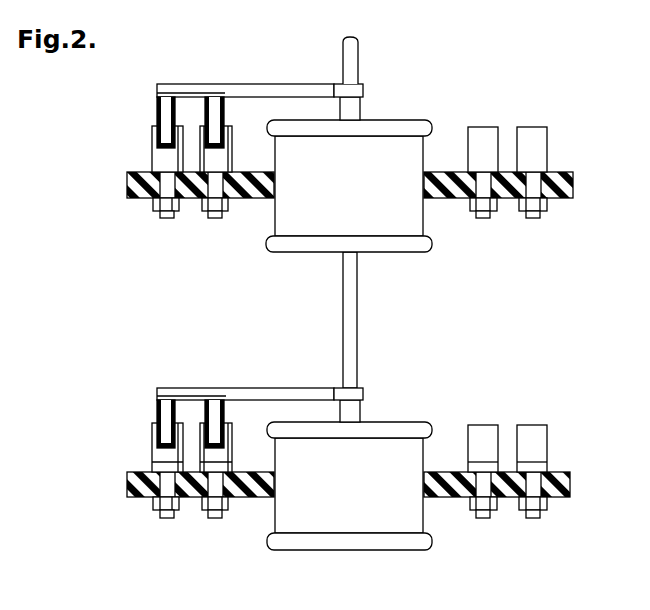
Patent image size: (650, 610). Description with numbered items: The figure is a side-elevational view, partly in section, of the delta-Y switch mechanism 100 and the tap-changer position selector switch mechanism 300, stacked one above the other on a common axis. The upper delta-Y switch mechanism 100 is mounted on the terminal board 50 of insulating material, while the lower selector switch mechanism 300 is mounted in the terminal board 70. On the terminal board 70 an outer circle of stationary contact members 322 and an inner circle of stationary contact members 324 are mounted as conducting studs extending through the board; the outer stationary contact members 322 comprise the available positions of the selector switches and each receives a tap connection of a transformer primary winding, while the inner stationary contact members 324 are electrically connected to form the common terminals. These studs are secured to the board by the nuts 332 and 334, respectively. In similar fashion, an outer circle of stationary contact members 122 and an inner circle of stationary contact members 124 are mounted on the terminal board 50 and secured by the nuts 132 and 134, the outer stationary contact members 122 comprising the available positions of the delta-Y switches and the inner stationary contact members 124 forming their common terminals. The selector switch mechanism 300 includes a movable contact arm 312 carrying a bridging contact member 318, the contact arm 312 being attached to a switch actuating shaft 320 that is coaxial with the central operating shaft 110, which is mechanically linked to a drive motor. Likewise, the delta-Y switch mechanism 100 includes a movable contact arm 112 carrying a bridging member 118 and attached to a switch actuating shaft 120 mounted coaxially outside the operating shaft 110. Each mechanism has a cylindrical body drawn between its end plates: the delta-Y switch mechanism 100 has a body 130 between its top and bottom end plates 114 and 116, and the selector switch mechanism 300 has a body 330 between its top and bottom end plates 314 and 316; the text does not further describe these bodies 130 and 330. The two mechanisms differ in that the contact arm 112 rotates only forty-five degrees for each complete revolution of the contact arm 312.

The terminal board 50 is at (573, 186).
The terminal board 70 is at (570, 490).
The delta-Y switch mechanism 100 is at (412, 278).
The operating shaft 110 is at (359, 61).
The movable contact arm 112 is at (291, 85).
The top end plate 114 is at (432, 128).
The bottom end plate 116 is at (425, 252).
The bridging member 118 is at (157, 113).
The switch actuating shaft 120 is at (360, 115).
The stationary contact members 122 is at (152, 151).
The stationary contact members 124 is at (232, 152).
The cylindrical housing 130 is at (423, 219).
The nuts 132 is at (158, 216).
The nuts 134 is at (227, 218).
The tap-changer position selector switch mechanism 300 is at (410, 580).
The movable contact arm 312 is at (304, 387).
The top end plate 314 is at (432, 429).
The bottom end plate 316 is at (425, 550).
The bridging contact member 318 is at (157, 410).
The switch actuating shaft 320 is at (360, 411).
The stationary contact members 322 is at (152, 447).
The stationary contact members 324 is at (232, 450).
The cylindrical housing 330 is at (423, 526).
The nuts 332 is at (152, 511).
The nuts 334 is at (225, 519).